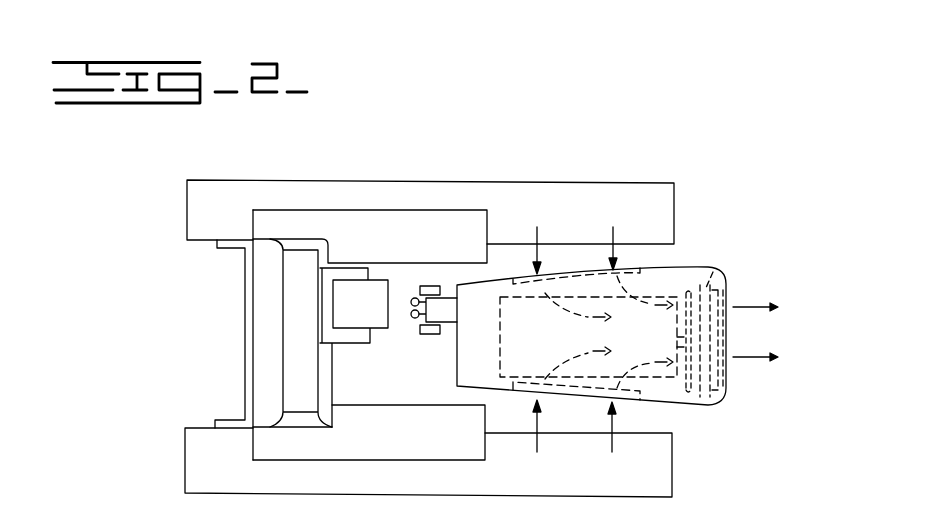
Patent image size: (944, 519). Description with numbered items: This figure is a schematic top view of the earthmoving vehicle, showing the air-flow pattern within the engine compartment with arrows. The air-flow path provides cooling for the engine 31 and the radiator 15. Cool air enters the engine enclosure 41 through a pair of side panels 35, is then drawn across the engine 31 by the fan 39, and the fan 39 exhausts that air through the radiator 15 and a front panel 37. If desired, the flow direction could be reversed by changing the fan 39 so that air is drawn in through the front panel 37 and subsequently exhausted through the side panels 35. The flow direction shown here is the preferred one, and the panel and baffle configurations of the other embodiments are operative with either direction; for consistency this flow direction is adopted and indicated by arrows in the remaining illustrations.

The radiator 15 is at (720, 272).
The engine 31 is at (505, 362).
The side panels 35 is at (578, 272).
The front panel 37 is at (724, 380).
The fan 39 is at (683, 406).
The engine enclosure 41 is at (688, 262).